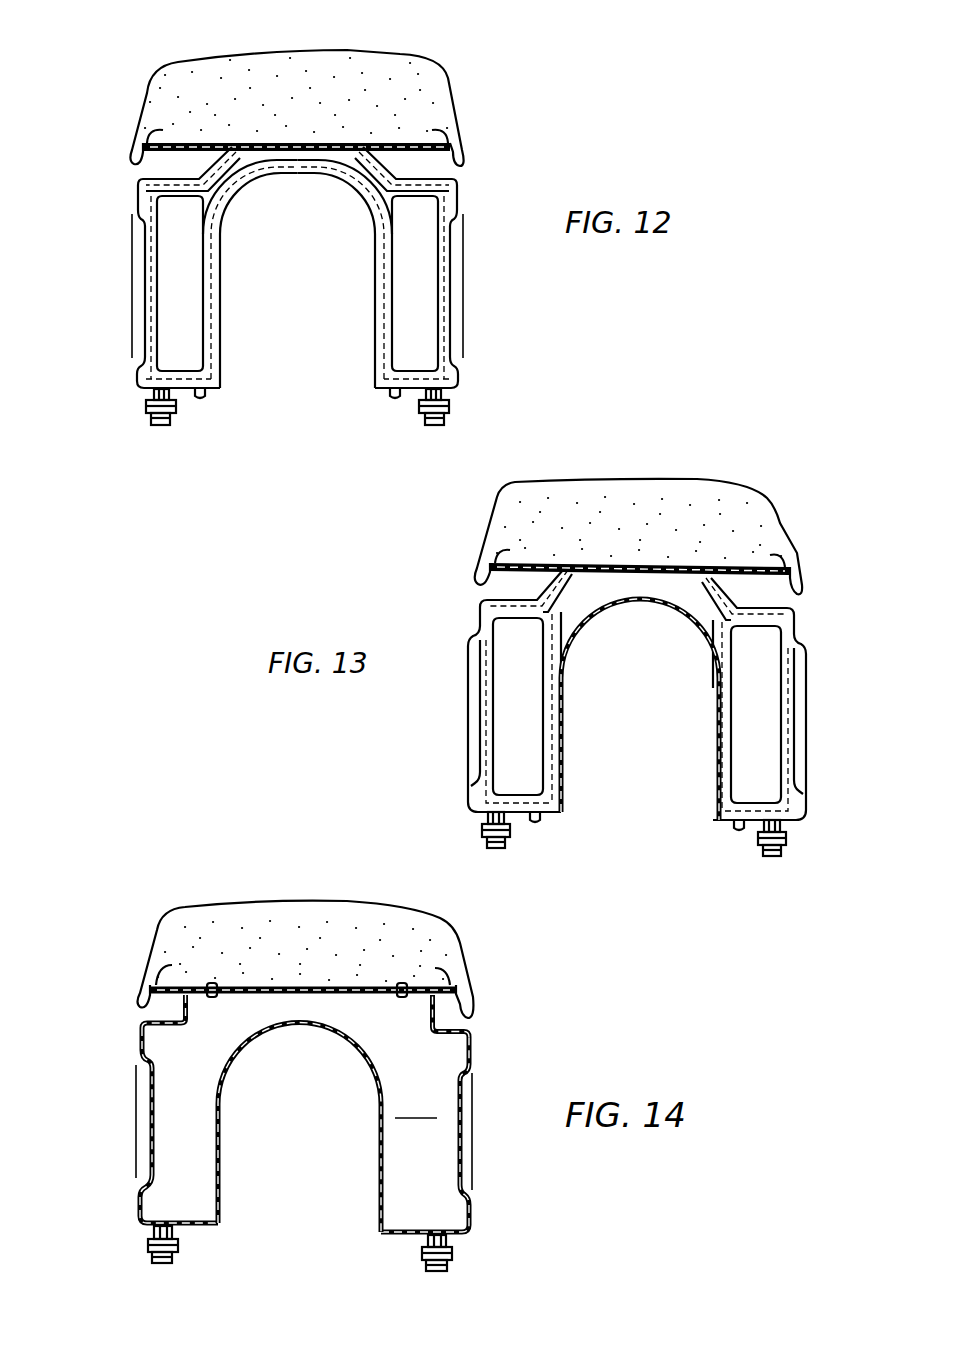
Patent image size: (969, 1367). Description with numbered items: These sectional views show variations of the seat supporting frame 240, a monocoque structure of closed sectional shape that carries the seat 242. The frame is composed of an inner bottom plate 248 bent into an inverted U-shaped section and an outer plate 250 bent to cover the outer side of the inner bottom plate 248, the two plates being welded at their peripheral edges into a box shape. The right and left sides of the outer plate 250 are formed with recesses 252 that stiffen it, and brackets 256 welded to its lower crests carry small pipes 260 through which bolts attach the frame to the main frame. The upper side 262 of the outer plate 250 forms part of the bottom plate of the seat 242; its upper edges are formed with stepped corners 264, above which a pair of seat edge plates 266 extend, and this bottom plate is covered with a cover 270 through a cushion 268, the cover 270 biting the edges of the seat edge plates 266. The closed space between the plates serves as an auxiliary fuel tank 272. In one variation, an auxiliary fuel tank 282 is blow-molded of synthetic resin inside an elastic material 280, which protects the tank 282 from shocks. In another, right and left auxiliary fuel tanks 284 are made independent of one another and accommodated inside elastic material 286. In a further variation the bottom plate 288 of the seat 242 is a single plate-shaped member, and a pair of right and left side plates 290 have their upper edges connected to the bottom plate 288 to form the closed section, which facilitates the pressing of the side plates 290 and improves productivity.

In FIG. 12, the seat supporting frame 240 is at (301, 311).
In FIG. 13, the seat supporting frame 240 is at (642, 738).
In FIG. 14, the seat supporting frame 240 is at (315, 1155).
In FIG. 12, the seat 242 is at (310, 86).
In FIG. 13, the seat 242 is at (645, 509).
In FIG. 14, the seat 242 is at (292, 936).
In FIG. 12, the inner bottom plate 248 is at (221, 253).
In FIG. 13, the inner bottom plate 248 is at (590, 617).
In FIG. 14, the inner bottom plate 248 is at (226, 1080).
In FIG. 12, the outer plate 250 is at (465, 380).
In FIG. 13, the outer plate 250 is at (470, 787).
In FIG. 12, the recesses 252 is at (132, 233).
In FIG. 13, the recesses 252 is at (471, 722).
In FIG. 14, the recesses 252 is at (468, 1121).
In FIG. 12, the brackets 256 is at (161, 427).
In FIG. 13, the brackets 256 is at (495, 849).
In FIG. 14, the brackets 256 is at (158, 1266).
In FIG. 12, the small pipes 260 is at (450, 407).
In FIG. 13, the small pipes 260 is at (481, 828).
In FIG. 14, the small pipes 260 is at (147, 1244).
In FIG. 12, the upper side 262 is at (296, 141).
In FIG. 13, the upper side 262 is at (640, 569).
In FIG. 14, the upper side 262 is at (303, 990).
In FIG. 12, the stepped corners 264 is at (455, 180).
In FIG. 13, the stepped corners 264 is at (500, 595).
In FIG. 14, the stepped corners 264 is at (153, 1013).
In FIG. 12, the seat edge plates 266 is at (443, 140).
In FIG. 13, the seat edge plates 266 is at (507, 553).
In FIG. 12, the cushion 268 is at (347, 70).
In FIG. 13, the cushion 268 is at (577, 501).
In FIG. 14, the cushion 268 is at (301, 913).
In FIG. 12, the cover 270 is at (428, 62).
In FIG. 13, the cover 270 is at (673, 481).
In FIG. 14, the cover 270 is at (413, 915).
In FIG. 14, the auxiliary fuel tank 272 is at (420, 1104).
In FIG. 12, the elastic material 280 is at (221, 294).
In FIG. 12, the auxiliary fuel tank 282 is at (204, 262).
In FIG. 13, the auxiliary fuel tanks 284 is at (545, 697).
In FIG. 13, the elastic material 286 is at (481, 673).
In FIG. 14, the bottom plate 288 is at (451, 940).
In FIG. 14, the side plates 290 is at (137, 1203).